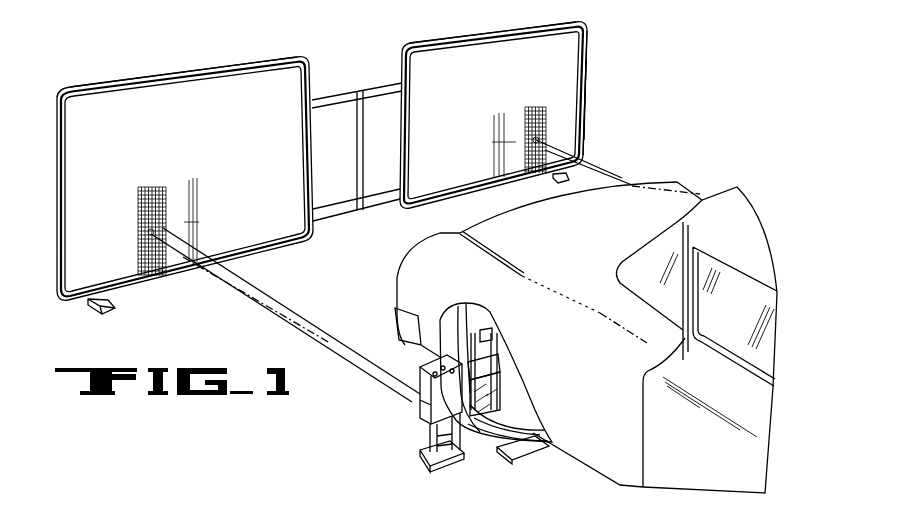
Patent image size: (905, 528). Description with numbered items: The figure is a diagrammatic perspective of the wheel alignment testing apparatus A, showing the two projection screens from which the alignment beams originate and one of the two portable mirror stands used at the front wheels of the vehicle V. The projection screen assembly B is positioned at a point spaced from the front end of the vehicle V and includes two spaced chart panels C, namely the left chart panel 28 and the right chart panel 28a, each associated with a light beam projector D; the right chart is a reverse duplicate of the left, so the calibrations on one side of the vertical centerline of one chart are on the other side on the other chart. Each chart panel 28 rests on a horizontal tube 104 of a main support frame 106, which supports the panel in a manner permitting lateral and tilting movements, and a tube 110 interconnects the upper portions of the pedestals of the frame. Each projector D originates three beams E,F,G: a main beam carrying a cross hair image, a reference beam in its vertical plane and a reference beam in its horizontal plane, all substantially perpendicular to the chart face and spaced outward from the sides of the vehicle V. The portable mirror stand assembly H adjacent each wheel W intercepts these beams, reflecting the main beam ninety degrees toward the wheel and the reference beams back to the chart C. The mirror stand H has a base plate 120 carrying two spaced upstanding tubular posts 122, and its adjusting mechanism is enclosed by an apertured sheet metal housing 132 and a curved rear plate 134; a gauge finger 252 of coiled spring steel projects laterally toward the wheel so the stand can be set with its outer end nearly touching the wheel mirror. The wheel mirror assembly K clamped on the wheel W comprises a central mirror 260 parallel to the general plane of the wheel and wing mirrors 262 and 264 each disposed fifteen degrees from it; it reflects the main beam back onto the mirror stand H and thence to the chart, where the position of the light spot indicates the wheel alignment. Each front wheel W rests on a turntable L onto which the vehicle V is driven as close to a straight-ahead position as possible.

The chart panel 28 is at (252, 134).
The chart panel 28a is at (488, 93).
The horizontal tube 104 is at (341, 205).
The main support frame 106 is at (384, 59).
The tube 110 is at (330, 97).
The base plate 120 is at (416, 460).
The tubular post 122 is at (450, 452).
The apertured sheet metal housing 132 is at (443, 400).
The curved rear plate 134 is at (420, 413).
The gauge finger 252 is at (472, 452).
The central mirror 260 is at (481, 370).
The wing mirror 262 is at (492, 391).
The wing mirror 264 is at (470, 335).
The wheel alignment testing apparatus A is at (606, 99).
The projection screen assembly B is at (595, 38).
The chart panel C is at (132, 80).
The light beam projector D is at (146, 229).
The light beams E,F,G is at (302, 330).
The portable mirror stand assembly H is at (402, 434).
The wheel mirror assembly K is at (515, 358).
The turntable L is at (540, 455).
The vehicle V is at (710, 182).
The wheel W is at (530, 416).